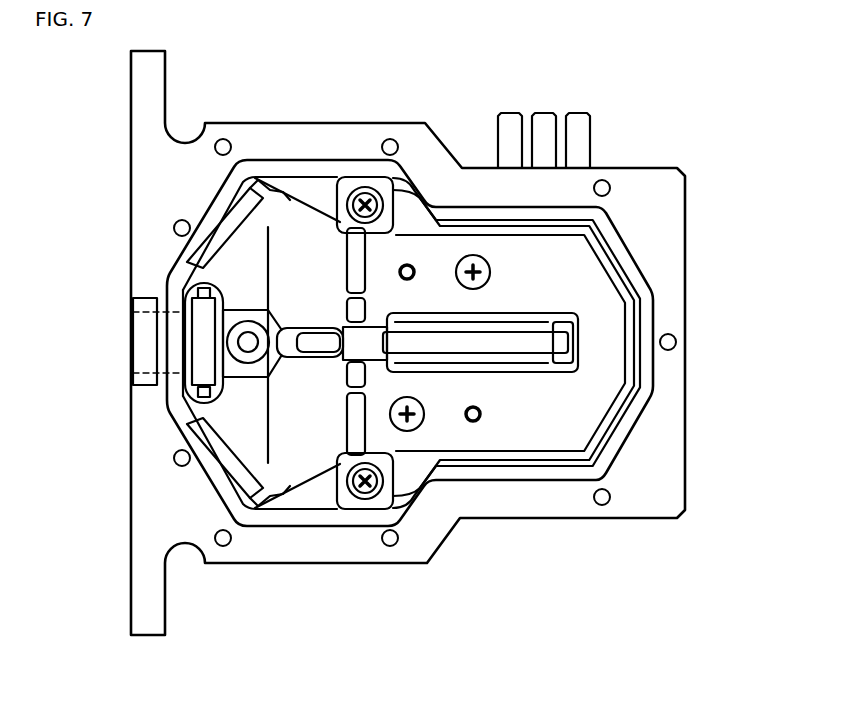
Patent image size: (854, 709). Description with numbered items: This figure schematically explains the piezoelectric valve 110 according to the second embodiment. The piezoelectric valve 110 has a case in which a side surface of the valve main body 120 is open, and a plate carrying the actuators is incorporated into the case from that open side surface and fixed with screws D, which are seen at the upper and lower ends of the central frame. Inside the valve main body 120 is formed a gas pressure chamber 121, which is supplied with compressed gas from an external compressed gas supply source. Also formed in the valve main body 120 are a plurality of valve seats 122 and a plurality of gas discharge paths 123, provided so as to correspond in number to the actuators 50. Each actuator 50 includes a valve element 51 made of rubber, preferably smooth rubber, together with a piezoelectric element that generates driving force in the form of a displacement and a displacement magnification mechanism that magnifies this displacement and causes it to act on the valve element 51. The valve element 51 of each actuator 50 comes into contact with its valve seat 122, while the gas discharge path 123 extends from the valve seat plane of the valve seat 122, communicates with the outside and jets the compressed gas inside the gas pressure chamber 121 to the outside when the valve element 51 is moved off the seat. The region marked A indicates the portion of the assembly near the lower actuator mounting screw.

The piezoelectric valve 110 is at (357, 81).
The valve main body 120 is at (645, 189).
The gas pressure chamber 121 is at (240, 275).
The valve seat 122 is at (185, 315).
The gas discharge path 123 is at (147, 322).
The valve element 51 is at (205, 368).
The actuator 50 is at (446, 435).
The region A is at (409, 429).
The screws D is at (367, 203).